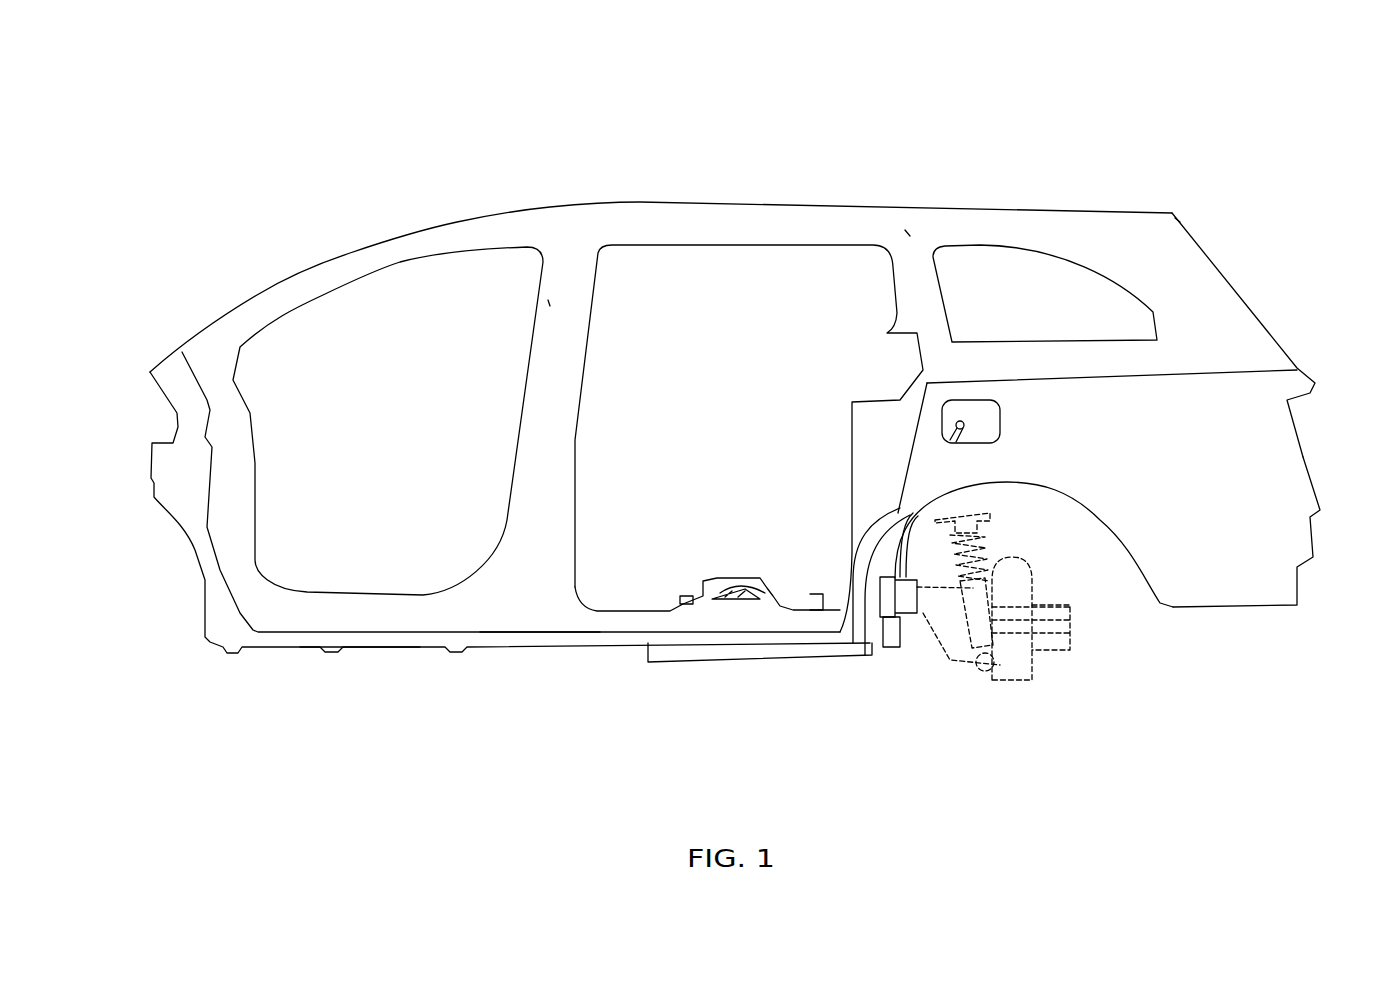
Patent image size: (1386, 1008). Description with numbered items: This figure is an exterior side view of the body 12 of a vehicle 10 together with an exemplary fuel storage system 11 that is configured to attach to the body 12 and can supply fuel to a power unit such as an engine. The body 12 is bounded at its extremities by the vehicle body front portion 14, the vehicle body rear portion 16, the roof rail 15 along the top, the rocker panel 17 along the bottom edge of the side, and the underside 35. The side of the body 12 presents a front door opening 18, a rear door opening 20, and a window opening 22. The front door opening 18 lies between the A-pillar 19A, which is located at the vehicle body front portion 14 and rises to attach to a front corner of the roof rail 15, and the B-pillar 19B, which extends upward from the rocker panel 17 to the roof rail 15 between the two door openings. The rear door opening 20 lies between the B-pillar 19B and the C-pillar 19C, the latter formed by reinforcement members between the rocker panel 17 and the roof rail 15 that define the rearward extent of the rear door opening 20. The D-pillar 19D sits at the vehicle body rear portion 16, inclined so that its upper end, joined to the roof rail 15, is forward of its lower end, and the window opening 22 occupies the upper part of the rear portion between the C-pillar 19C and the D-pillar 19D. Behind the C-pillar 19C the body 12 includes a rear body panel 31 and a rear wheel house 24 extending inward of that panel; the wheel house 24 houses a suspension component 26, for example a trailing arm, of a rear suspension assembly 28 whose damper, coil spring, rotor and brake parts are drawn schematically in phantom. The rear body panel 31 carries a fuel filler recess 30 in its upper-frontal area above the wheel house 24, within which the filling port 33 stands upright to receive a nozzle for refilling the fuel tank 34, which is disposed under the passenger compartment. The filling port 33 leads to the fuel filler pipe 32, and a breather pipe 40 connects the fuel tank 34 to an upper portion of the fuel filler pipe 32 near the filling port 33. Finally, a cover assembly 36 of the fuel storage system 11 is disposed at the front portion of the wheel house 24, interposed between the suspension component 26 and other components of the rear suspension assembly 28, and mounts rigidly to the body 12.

The vehicle 10 is at (1252, 150).
The fuel storage system 11 is at (765, 692).
The body 12 is at (1187, 280).
The vehicle body front portion 14 is at (190, 537).
The roof rail 15 is at (728, 223).
The vehicle body rear portion 16 is at (1313, 488).
The rocker panel 17 is at (537, 608).
The front door opening 18 is at (387, 298).
The A-pillar 19A is at (212, 382).
The B-pillar 19B is at (567, 280).
The C-pillar 19C is at (903, 262).
The D-pillar 19D is at (1155, 253).
The rear door opening 20 is at (662, 280).
The window opening 22 is at (988, 280).
The rear wheel house 24 is at (1040, 502).
The suspension component 26 is at (917, 620).
The rear suspension assembly 28 is at (1017, 640).
The fuel filler recess 30 is at (988, 422).
The rear body panel 31 is at (1260, 453).
The fuel filler pipe 32 is at (902, 557).
The filling port 33 is at (967, 427).
The fuel tank 34 is at (717, 592).
The underside 35 is at (377, 645).
The cover assembly 36 is at (882, 628).
The breather pipe 40 is at (923, 535).